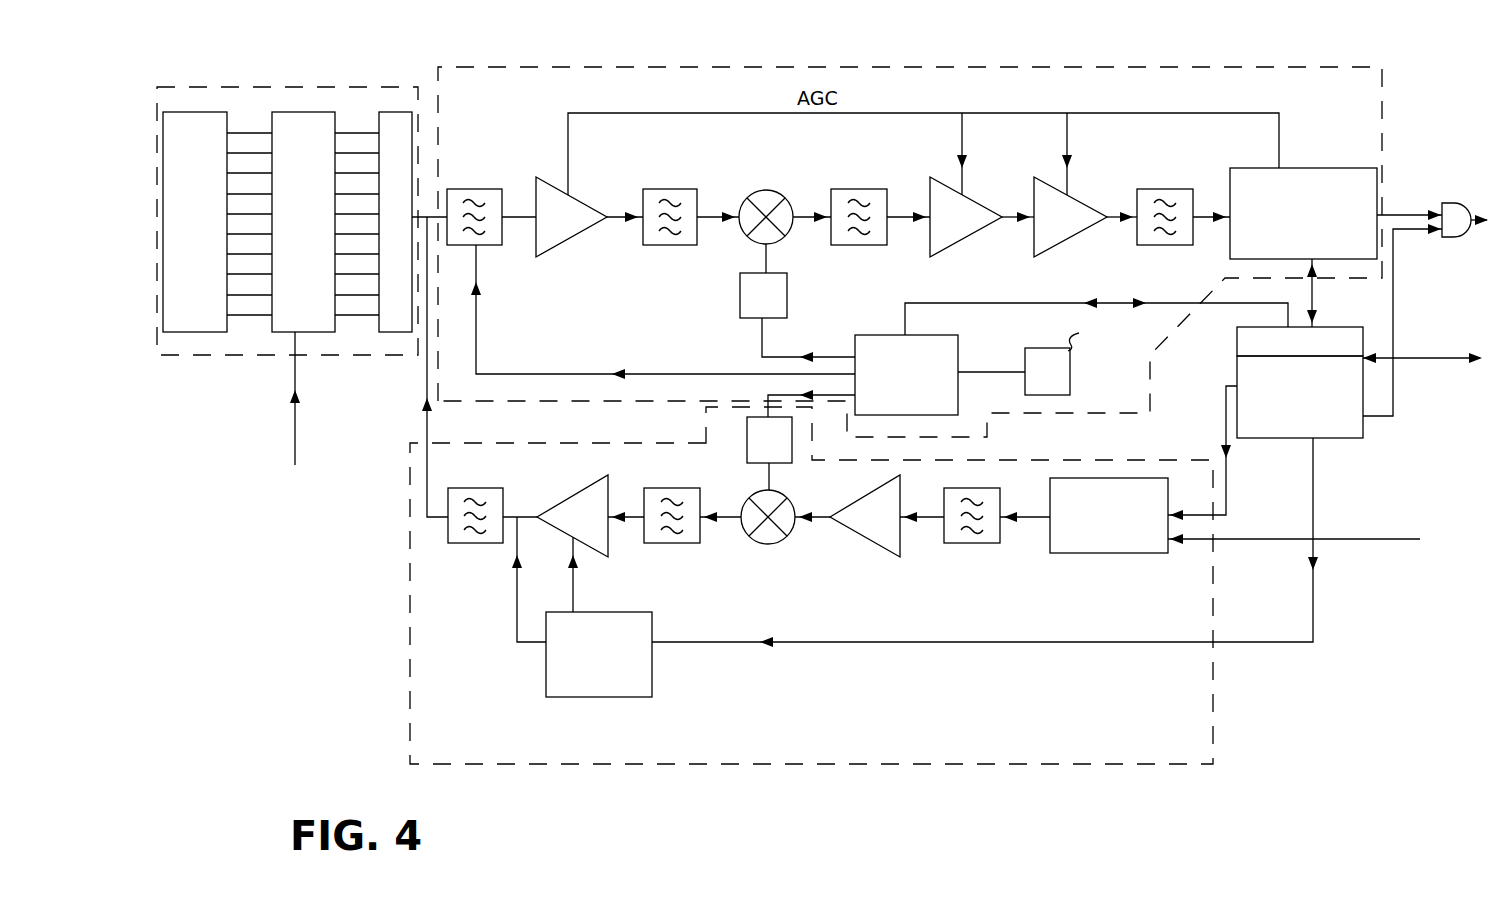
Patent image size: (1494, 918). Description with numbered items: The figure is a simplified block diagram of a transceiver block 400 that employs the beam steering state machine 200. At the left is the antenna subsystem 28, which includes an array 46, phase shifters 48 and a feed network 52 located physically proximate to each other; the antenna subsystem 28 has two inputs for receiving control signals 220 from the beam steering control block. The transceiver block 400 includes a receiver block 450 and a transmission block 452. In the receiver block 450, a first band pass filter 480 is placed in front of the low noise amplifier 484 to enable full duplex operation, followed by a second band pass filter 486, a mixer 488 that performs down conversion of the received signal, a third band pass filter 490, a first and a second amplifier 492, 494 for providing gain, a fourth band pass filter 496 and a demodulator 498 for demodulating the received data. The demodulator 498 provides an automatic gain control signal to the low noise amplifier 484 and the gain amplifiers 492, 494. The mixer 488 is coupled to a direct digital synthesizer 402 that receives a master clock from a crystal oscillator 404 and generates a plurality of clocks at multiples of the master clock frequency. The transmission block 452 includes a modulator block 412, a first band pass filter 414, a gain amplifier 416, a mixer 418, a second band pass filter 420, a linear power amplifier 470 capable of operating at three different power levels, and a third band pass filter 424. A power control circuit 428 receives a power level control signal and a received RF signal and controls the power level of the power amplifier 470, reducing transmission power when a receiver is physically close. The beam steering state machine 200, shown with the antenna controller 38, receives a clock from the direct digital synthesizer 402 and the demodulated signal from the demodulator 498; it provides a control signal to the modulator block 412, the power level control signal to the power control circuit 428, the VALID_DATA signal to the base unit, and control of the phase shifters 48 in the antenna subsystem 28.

The transceiver block 400 is at (285, 38).
The antenna subsystem 28 is at (427, 103).
The array 46 is at (205, 333).
The phase shifters 48 is at (275, 333).
The feed network 52 is at (388, 333).
The control signals 220 is at (887, 412).
The receiver block 450 is at (972, 64).
The first band pass filter 480 is at (497, 188).
The low noise amplifier 484 is at (566, 243).
The second band pass filter 486 is at (656, 248).
The mixer 488 is at (776, 192).
The third band pass filter 490 is at (856, 248).
The first amplifier 492 is at (929, 252).
The second amplifier 494 is at (1035, 252).
The fourth band pass filter 496 is at (1171, 248).
The demodulator 498 is at (1330, 166).
The beam steering state machine 200 is at (1300, 341).
The antenna controller 38 is at (1066, 435).
The direct digital synthesizer 402 is at (937, 416).
The crystal oscillator 404 is at (1052, 397).
The modulator block 412 is at (1095, 554).
The first band pass filter 414 is at (975, 544).
The gain amplifier 416 is at (885, 555).
The mixer 418 is at (770, 545).
The second band pass filter 420 is at (667, 544).
The third band pass filter 424 is at (465, 544).
The power control circuit 428 is at (578, 698).
The power amplifier 470 is at (567, 498).
The transmission block 452 is at (1035, 766).